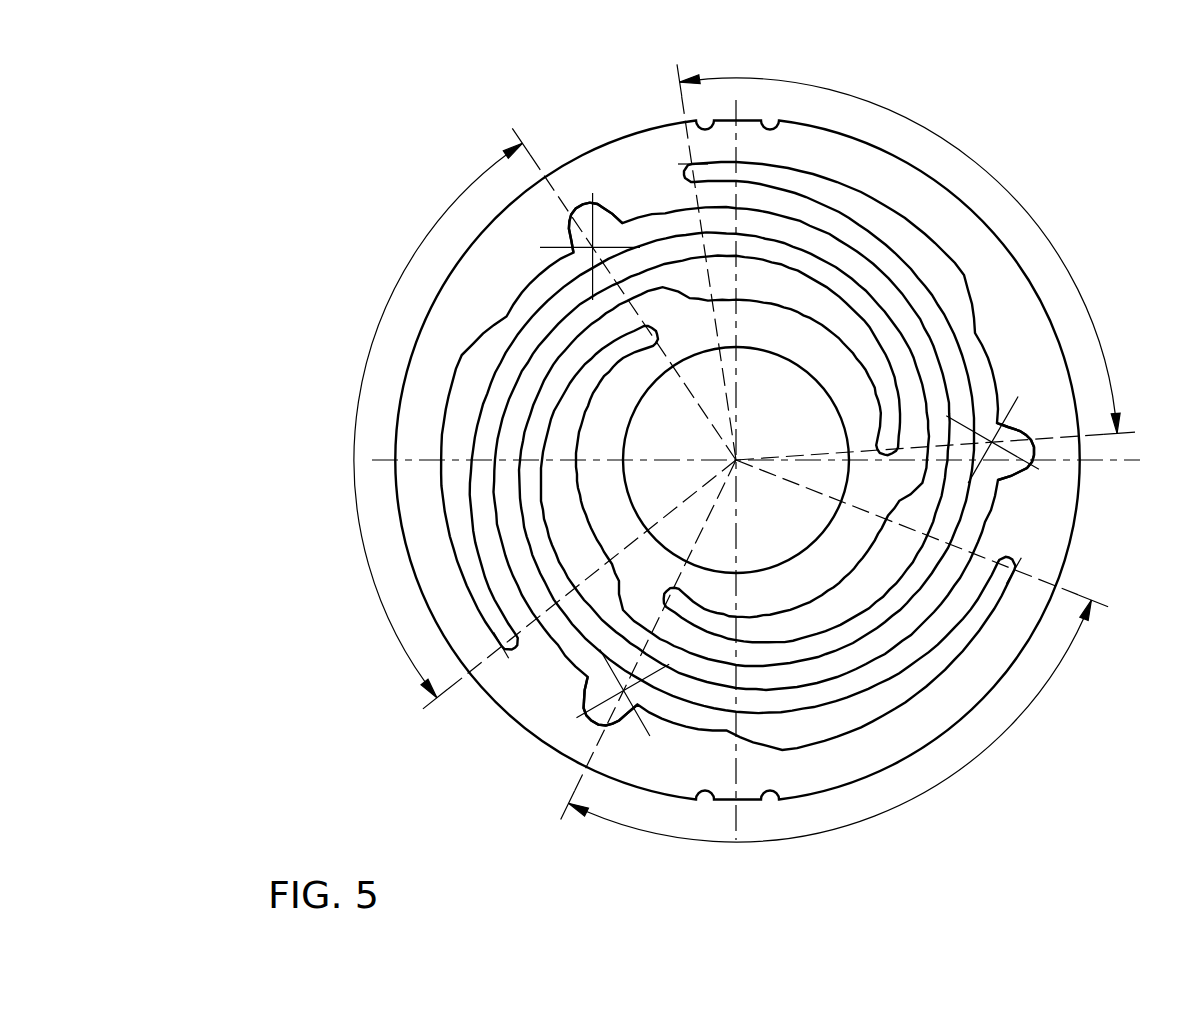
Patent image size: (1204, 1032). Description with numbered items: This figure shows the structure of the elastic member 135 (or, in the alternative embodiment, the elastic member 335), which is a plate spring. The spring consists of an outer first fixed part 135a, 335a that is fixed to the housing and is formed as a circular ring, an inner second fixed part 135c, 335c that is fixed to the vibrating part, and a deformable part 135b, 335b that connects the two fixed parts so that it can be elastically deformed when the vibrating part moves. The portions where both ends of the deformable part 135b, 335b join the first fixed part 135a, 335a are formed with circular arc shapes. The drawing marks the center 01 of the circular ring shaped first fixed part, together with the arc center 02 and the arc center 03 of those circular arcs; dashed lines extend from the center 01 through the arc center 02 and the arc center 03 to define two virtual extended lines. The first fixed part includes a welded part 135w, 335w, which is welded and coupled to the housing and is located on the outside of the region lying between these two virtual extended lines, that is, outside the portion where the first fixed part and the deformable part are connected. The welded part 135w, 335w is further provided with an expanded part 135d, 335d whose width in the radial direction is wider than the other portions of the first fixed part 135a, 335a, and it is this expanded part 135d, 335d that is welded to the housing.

The elastic member 135 is at (702, 477).
The elastic member 335 is at (702, 477).
The welded part 135w is at (675, 503).
The welded part 335w is at (1022, 120).
The first fixed part 135a is at (675, 503).
The first fixed part 335a is at (675, 503).
The deformable part 135b is at (666, 477).
The deformable part 335b is at (490, 566).
The second fixed part 135c is at (530, 460).
The second fixed part 335c is at (580, 481).
The expanded part 135d is at (746, 553).
The expanded part 335d is at (993, 347).
The center of the first fixed part 01 is at (738, 459).
The center of circular arc 02 is at (690, 166).
The center of circular arc 03 is at (588, 247).